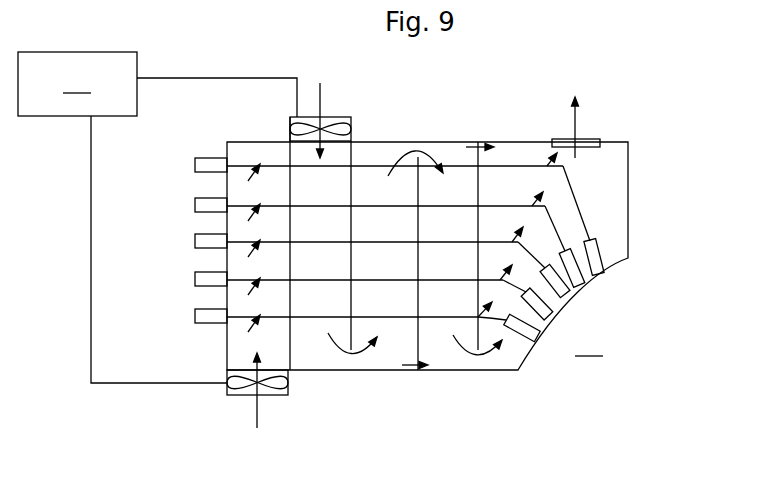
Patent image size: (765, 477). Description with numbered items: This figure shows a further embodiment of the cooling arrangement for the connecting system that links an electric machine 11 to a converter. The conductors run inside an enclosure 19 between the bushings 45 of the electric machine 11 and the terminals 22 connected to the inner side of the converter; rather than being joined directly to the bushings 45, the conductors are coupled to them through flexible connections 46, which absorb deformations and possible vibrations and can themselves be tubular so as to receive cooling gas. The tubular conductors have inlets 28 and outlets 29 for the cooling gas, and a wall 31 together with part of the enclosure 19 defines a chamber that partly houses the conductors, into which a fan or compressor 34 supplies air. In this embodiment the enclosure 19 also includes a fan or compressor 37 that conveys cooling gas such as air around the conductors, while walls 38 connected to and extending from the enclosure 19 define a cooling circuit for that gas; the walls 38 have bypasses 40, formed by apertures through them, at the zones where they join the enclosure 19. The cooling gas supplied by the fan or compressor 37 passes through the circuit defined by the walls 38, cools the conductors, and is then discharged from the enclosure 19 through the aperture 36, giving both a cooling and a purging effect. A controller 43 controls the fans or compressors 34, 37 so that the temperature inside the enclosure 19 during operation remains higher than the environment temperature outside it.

The electric machine 11 is at (589, 343).
The enclosure 19 is at (628, 238).
The terminals 22 is at (200, 172).
The inlets 28 is at (262, 168).
The outlets 29 is at (547, 166).
The wall 31 is at (285, 338).
The fan or compressor 34 is at (238, 387).
The aperture 36 is at (590, 142).
The fan or compressor 37 is at (338, 132).
The walls 38 is at (350, 267).
The bypasses 40 is at (418, 365).
The controller 43 is at (157, 217).
The bushings 45 is at (603, 272).
The flexible connections 46 is at (570, 185).